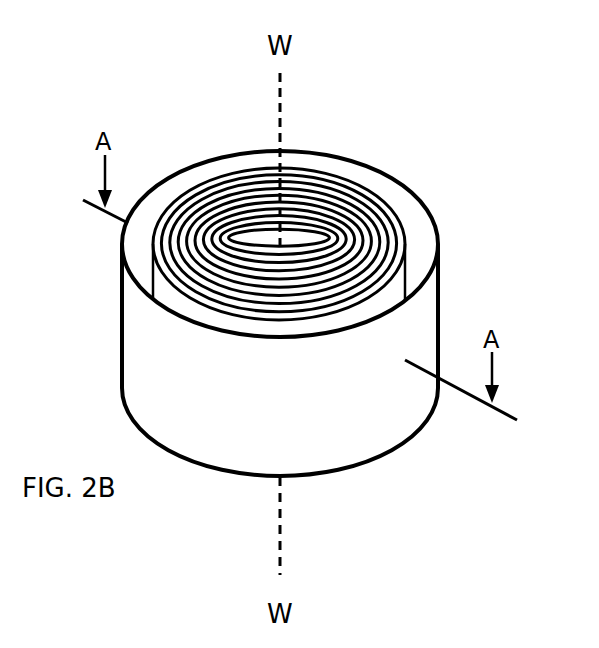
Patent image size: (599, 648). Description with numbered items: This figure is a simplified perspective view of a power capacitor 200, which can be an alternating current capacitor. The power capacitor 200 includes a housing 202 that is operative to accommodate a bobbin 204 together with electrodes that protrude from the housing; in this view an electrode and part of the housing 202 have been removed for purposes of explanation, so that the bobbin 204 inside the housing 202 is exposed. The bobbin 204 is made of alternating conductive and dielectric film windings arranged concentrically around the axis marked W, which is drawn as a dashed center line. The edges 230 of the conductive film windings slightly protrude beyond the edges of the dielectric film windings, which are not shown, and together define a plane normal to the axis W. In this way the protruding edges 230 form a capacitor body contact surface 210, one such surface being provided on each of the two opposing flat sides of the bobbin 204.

The power capacitor 200 is at (218, 63).
The housing 202 is at (437, 237).
The bobbin 204 is at (165, 290).
The capacitor body contact surface 210 is at (235, 167).
The edges of the conductive film windings 230 is at (340, 183).